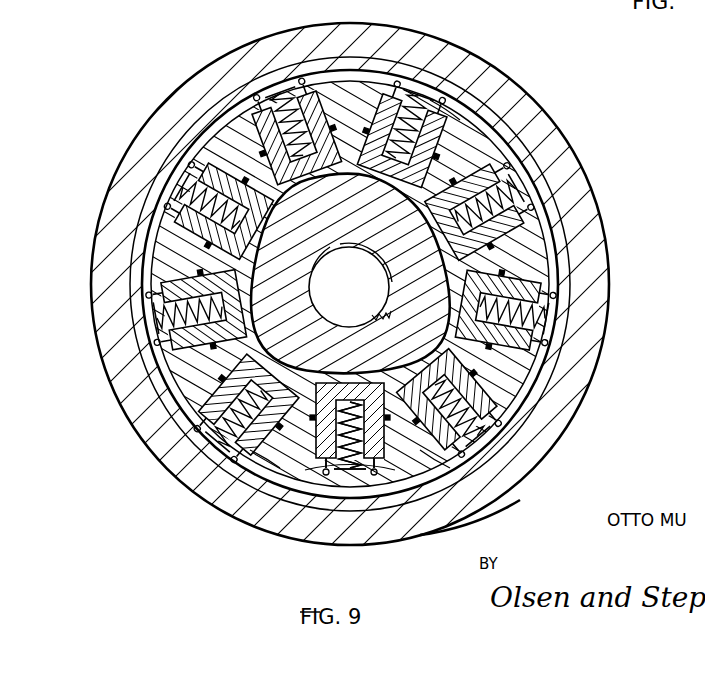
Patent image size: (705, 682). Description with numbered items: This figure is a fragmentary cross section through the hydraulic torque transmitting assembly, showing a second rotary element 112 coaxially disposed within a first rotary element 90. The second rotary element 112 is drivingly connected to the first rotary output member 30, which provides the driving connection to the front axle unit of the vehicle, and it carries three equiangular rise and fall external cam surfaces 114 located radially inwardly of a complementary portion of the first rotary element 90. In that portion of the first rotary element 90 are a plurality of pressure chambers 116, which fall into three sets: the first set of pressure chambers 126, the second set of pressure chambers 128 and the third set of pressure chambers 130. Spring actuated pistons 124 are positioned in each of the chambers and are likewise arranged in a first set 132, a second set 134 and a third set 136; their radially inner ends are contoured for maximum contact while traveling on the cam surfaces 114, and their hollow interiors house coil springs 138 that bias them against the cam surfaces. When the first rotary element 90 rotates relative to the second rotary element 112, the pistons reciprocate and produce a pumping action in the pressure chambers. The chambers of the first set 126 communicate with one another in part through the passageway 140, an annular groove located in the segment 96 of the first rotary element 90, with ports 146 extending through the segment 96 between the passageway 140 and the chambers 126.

The first rotary output member 30 is at (350, 285).
The first rotary element 90 is at (216, 56).
The segment 96 is at (147, 322).
The second rotary element 112 is at (350, 284).
The cam surfaces 114 is at (467, 510).
The pressure chambers 116 is at (400, 532).
The spring actuated pistons 124 is at (333, 470).
The pressure chambers 126 is at (207, 167).
The pressure chambers 128 is at (462, 118).
The pressure chambers 130 is at (328, 100).
The first set of pistons 132 is at (500, 177).
The second set of pistons 134 is at (406, 98).
The third set of pistons 136 is at (268, 118).
The coil springs 138 is at (445, 108).
The passageway 140 is at (160, 393).
The ports 146 is at (510, 157).